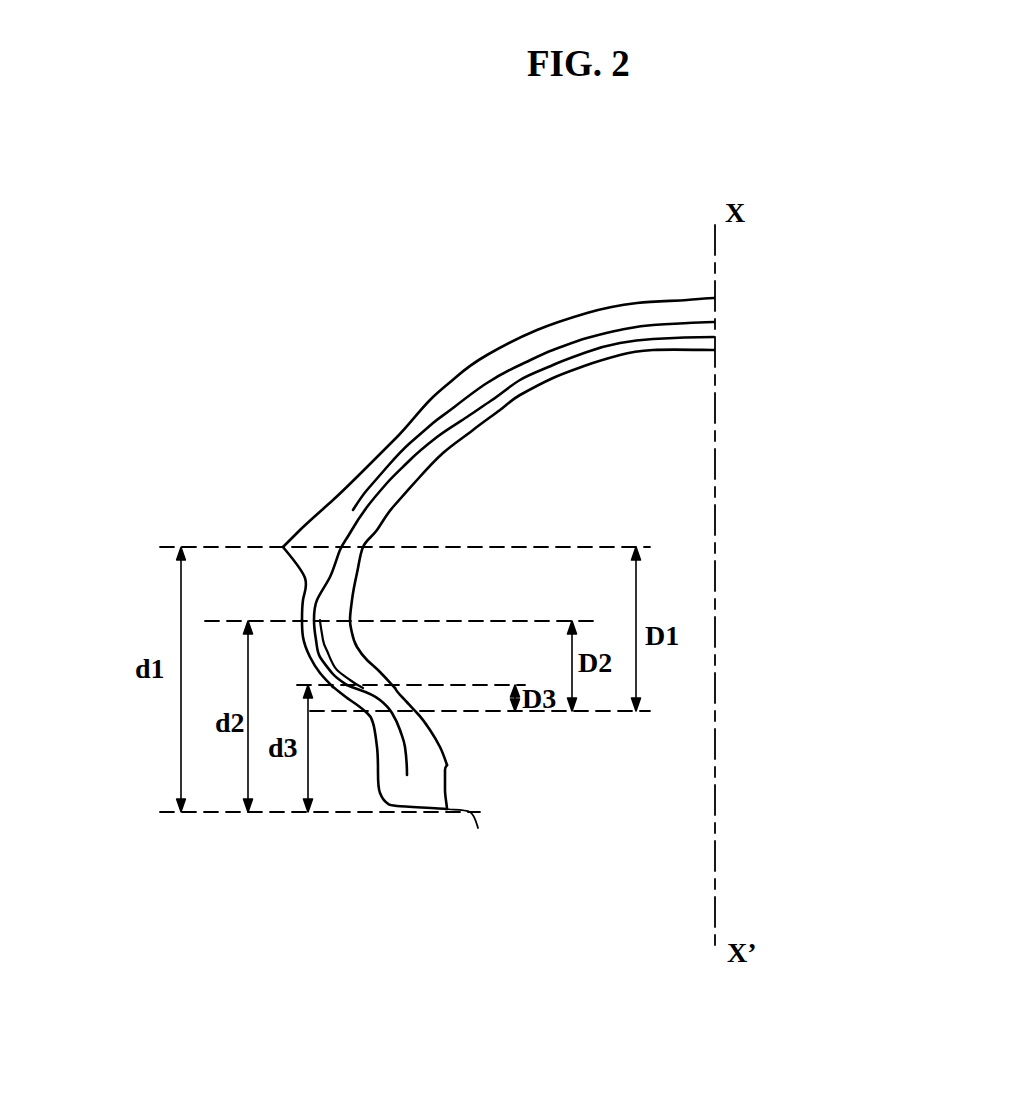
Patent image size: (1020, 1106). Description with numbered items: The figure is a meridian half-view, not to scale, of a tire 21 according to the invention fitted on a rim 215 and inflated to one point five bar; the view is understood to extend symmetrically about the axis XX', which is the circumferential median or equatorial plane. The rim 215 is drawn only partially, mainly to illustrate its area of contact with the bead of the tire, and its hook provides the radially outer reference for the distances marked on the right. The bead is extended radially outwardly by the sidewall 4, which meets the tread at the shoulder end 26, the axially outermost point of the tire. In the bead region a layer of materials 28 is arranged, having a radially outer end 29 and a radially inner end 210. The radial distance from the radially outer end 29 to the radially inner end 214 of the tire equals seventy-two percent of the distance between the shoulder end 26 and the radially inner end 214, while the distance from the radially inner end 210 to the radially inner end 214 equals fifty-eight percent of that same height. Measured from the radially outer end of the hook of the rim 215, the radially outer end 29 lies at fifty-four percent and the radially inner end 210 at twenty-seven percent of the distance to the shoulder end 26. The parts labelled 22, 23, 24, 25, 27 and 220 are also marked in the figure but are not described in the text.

The sidewall 4 is at (143, 679).
The tire 21 is at (352, 355).
The carcass ply 22 is at (386, 714).
The bead core region 23 is at (422, 764).
The bead portion 24 is at (257, 600).
The outer surface / sidewall 25 is at (570, 317).
The shoulder end 26 is at (283, 547).
The carcass ply 27 is at (507, 374).
The layer of materials 28 is at (333, 657).
The radially outer end of the layer of materials 29 is at (320, 622).
The radially inner end of the layer of materials 210 is at (362, 687).
The radially inner end of the tire 214 is at (447, 812).
The rim 215 is at (374, 777).
The bead base region 220 is at (296, 655).